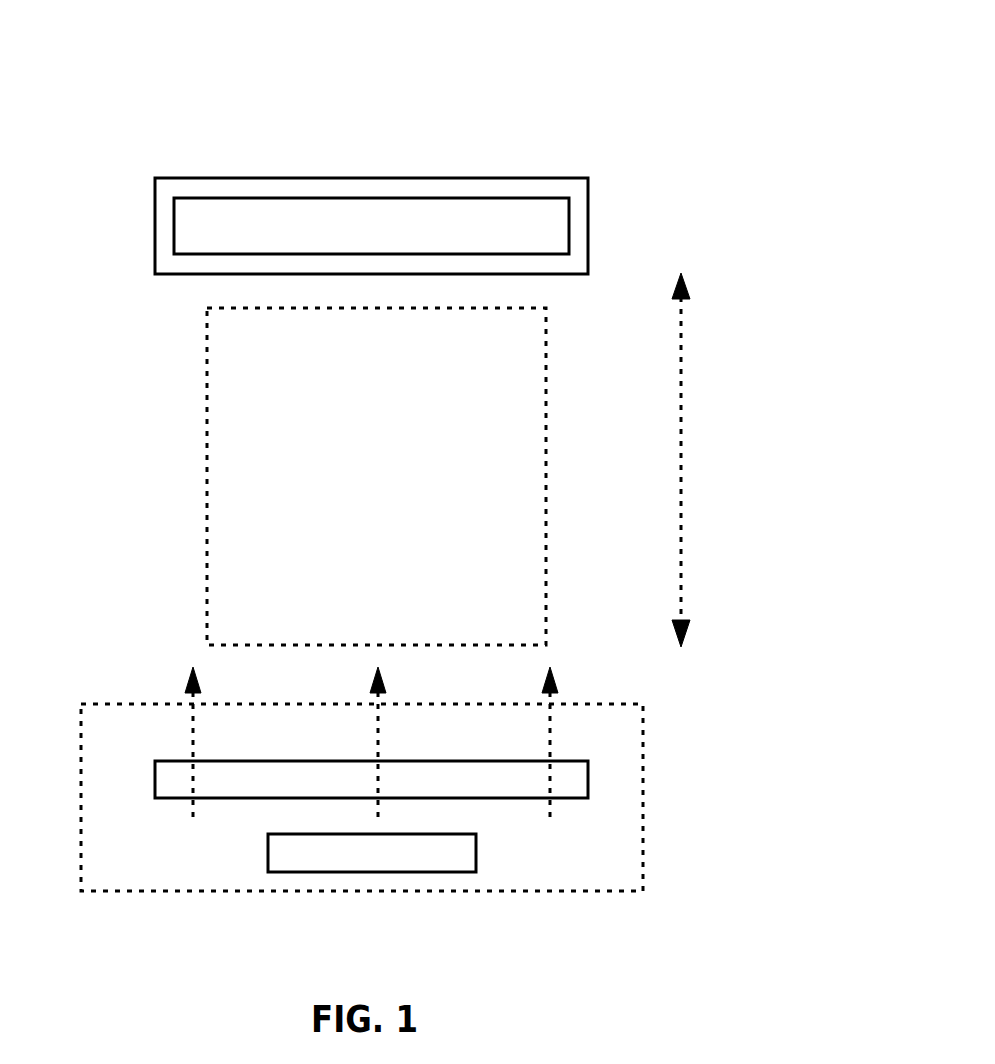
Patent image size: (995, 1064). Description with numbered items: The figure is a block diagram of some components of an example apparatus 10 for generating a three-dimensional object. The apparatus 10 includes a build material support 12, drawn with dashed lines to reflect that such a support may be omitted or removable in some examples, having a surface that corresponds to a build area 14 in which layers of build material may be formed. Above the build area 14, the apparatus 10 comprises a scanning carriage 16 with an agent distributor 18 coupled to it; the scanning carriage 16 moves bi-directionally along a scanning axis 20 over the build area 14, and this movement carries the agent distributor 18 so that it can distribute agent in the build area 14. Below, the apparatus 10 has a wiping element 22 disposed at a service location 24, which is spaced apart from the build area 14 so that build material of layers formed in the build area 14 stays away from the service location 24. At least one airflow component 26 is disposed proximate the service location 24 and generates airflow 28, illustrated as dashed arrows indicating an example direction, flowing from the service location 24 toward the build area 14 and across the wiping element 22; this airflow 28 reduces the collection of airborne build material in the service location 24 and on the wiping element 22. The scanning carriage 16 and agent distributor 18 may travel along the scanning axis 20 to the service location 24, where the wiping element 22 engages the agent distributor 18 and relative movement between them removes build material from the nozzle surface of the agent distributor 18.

The apparatus 10 is at (650, 83).
The build material support 12 is at (207, 418).
The build area 14 is at (529, 637).
The scanning carriage 16 is at (160, 178).
The agent distributor 18 is at (555, 251).
The scanning axis 20 is at (706, 460).
The wiping element 22 is at (588, 779).
The service location 24 is at (645, 798).
The airflow component 26 is at (459, 866).
The airflow 28 is at (355, 744).